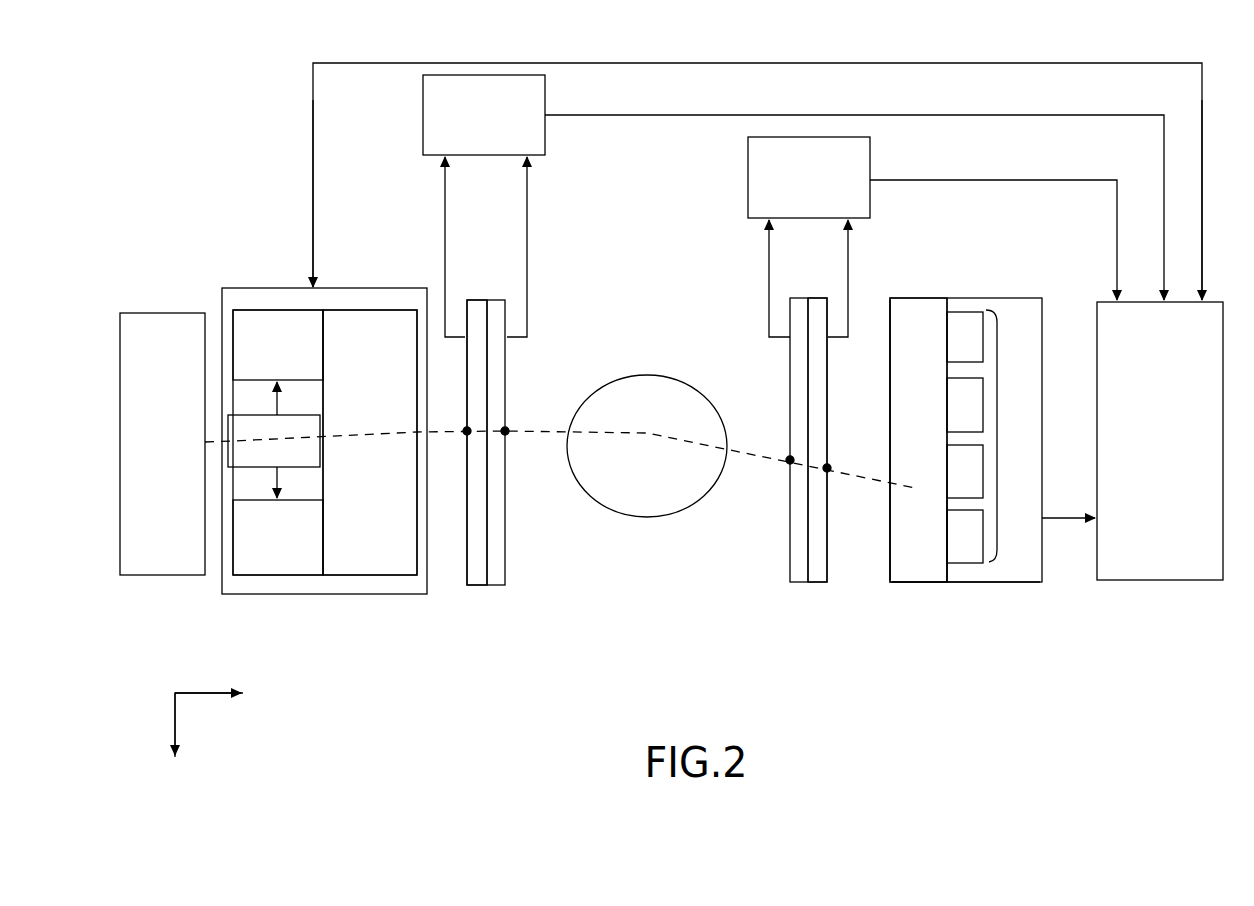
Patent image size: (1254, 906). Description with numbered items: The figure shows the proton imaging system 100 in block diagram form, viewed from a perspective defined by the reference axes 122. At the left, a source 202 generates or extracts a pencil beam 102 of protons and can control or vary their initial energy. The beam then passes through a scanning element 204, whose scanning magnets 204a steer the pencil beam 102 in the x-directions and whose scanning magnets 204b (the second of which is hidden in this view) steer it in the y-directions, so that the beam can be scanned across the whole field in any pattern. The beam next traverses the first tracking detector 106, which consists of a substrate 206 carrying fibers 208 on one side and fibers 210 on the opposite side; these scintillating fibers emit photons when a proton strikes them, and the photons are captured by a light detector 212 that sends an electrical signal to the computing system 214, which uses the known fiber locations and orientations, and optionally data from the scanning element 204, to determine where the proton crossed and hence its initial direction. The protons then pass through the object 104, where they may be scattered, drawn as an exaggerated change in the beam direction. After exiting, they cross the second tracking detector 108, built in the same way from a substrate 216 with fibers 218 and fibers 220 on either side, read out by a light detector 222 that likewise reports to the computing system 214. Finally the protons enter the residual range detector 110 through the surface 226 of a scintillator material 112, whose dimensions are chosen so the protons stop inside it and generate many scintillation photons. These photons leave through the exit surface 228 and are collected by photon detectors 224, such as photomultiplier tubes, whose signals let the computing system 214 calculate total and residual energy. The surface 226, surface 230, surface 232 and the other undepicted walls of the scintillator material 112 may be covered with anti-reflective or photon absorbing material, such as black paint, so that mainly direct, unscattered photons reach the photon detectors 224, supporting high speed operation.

The system 100 is at (182, 108).
The pencil beam 102 is at (680, 437).
The object 104 is at (620, 515).
The first tracking detector 106 is at (478, 300).
The second tracking detector 108 is at (797, 298).
The residual range detector 110 is at (978, 298).
The scintillator material 112 is at (900, 332).
The reference axes 122 is at (176, 718).
The source 202 is at (147, 473).
The scanning element 204 is at (312, 594).
The scanning magnets 204a is at (255, 368).
The scanning magnets 204b is at (349, 375).
The substrate 206 is at (487, 570).
The fibers 208 is at (467, 405).
The fibers 210 is at (505, 408).
The light detector 212 is at (469, 152).
The computing system 214 is at (1145, 477).
The substrate 216 is at (808, 562).
The fibers 218 is at (790, 405).
The fibers 220 is at (827, 408).
The light detector 222 is at (794, 208).
The photon detectors 224 is at (998, 440).
The surface 226 is at (890, 512).
The exit surface 228 is at (950, 572).
The surface 230 is at (935, 582).
The surface 232 is at (908, 298).